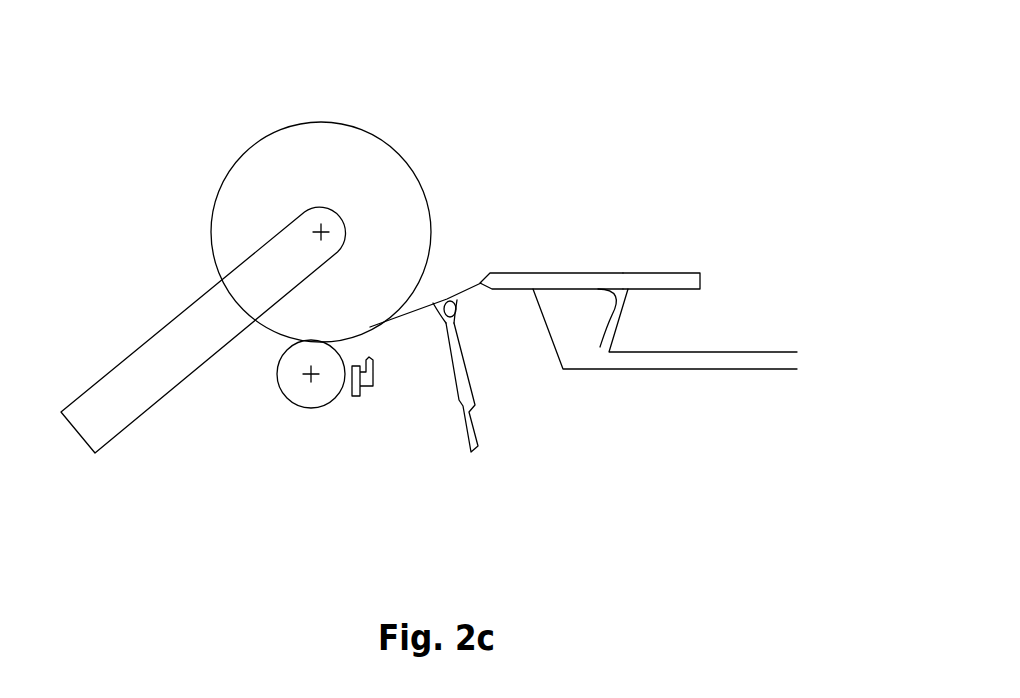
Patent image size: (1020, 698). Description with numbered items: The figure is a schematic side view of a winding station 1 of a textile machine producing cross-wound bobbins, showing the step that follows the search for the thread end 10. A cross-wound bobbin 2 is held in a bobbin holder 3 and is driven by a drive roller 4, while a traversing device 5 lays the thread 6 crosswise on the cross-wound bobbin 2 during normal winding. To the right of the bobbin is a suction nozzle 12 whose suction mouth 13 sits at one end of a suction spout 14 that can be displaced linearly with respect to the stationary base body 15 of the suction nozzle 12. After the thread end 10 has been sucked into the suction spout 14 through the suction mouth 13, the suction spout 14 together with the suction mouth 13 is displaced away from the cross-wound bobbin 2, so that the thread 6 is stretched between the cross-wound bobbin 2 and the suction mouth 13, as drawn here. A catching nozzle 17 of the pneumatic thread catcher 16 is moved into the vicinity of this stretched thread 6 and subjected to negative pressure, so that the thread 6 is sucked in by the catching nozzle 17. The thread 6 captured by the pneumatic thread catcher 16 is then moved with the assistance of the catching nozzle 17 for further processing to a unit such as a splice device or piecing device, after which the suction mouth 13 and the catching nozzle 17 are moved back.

The winding station 1 is at (203, 108).
The cross-wound bobbin 2 is at (248, 228).
The bobbin holder 3 is at (115, 407).
The drive roller 4 is at (298, 385).
The traversing device 5 is at (363, 397).
The thread 6 is at (405, 312).
The thread end 10 is at (598, 340).
The suction nozzle 12 is at (623, 272).
The suction mouth 13 is at (481, 280).
The suction spout 14 is at (677, 282).
The base body 15 is at (568, 338).
The pneumatic thread catcher 16 is at (478, 445).
The catching nozzle 17 is at (448, 295).